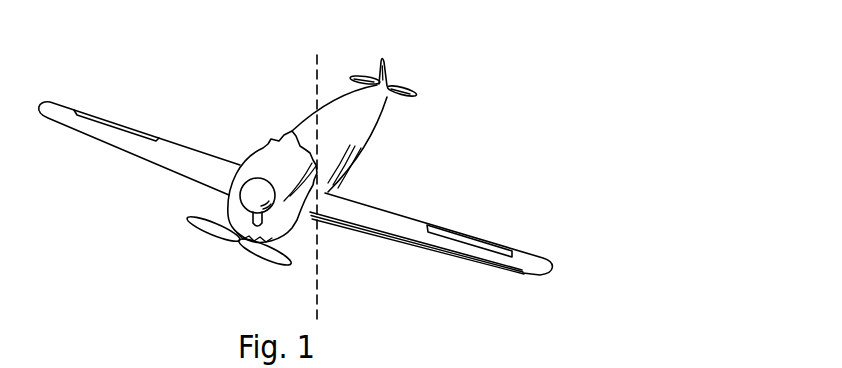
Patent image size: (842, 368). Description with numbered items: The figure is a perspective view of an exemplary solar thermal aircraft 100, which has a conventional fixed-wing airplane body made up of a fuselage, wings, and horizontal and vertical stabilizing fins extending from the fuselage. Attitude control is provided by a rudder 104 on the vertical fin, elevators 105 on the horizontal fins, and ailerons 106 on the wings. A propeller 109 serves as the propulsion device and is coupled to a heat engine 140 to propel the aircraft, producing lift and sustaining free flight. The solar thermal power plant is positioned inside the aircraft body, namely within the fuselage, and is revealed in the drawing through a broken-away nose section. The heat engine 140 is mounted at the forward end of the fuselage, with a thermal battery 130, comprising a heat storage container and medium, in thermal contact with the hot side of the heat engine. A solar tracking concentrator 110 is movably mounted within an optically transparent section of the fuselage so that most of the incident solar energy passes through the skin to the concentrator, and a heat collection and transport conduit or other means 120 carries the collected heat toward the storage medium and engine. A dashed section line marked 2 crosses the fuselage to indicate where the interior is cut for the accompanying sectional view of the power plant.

The section line for FIG. 2 is at (317, 55).
The aircraft 100 is at (462, 117).
The rudder 104 is at (385, 60).
The elevators 105 is at (398, 85).
The ailerons 106 is at (470, 241).
The propeller 109 is at (193, 231).
The solar tracking concentrator 110 is at (320, 172).
The heat collection/transport conduit 120 is at (283, 173).
The thermal battery 130 is at (249, 199).
The heat engine 140 is at (265, 220).